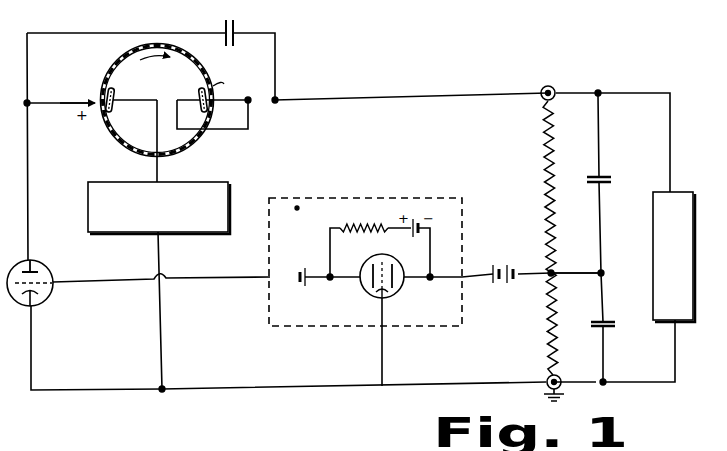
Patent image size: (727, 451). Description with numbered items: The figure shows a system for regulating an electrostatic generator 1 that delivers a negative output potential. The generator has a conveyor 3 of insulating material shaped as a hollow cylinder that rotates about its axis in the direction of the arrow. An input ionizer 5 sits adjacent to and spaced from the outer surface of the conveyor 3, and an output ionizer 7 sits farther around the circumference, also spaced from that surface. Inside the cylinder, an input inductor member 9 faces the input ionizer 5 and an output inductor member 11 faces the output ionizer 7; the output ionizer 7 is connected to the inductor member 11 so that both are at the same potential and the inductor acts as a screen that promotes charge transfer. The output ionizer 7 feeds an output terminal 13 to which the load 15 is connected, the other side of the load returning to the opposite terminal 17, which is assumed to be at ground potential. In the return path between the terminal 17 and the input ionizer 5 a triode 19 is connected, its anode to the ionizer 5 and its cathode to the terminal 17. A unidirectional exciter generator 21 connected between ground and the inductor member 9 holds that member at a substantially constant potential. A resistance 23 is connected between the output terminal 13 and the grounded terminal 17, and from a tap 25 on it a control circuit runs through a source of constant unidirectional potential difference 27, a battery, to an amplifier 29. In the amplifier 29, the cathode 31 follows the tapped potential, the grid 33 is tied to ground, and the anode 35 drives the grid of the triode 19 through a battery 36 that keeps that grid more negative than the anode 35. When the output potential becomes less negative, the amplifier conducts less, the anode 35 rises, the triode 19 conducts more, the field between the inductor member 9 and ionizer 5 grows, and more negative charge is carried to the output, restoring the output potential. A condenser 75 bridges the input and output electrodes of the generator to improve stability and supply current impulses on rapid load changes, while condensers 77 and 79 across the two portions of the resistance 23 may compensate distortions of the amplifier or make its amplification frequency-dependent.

The electrostatic generator 1 is at (207, 70).
The conveyor 3 is at (223, 81).
The input ionizer 5 is at (95, 101).
The output ionizer 7 is at (218, 100).
The input inductor member 9 is at (112, 94).
The output inductor member 11 is at (201, 95).
The output terminal 13 is at (541, 88).
The load 15 is at (695, 258).
The terminal 17 is at (562, 377).
The triode 19 is at (48, 267).
The exciter generator 21 is at (210, 180).
The resistance 23 is at (545, 176).
The tap 25 is at (555, 270).
The source of constant unidirectional potential difference 27 is at (506, 262).
The amplifier 29 is at (318, 194).
The cathode 31 is at (393, 285).
The grid 33 is at (385, 293).
The anode 35 is at (372, 285).
The battery 36 is at (300, 290).
The condenser 75 is at (233, 26).
The condenser 77 is at (612, 320).
The condenser 79 is at (605, 176).